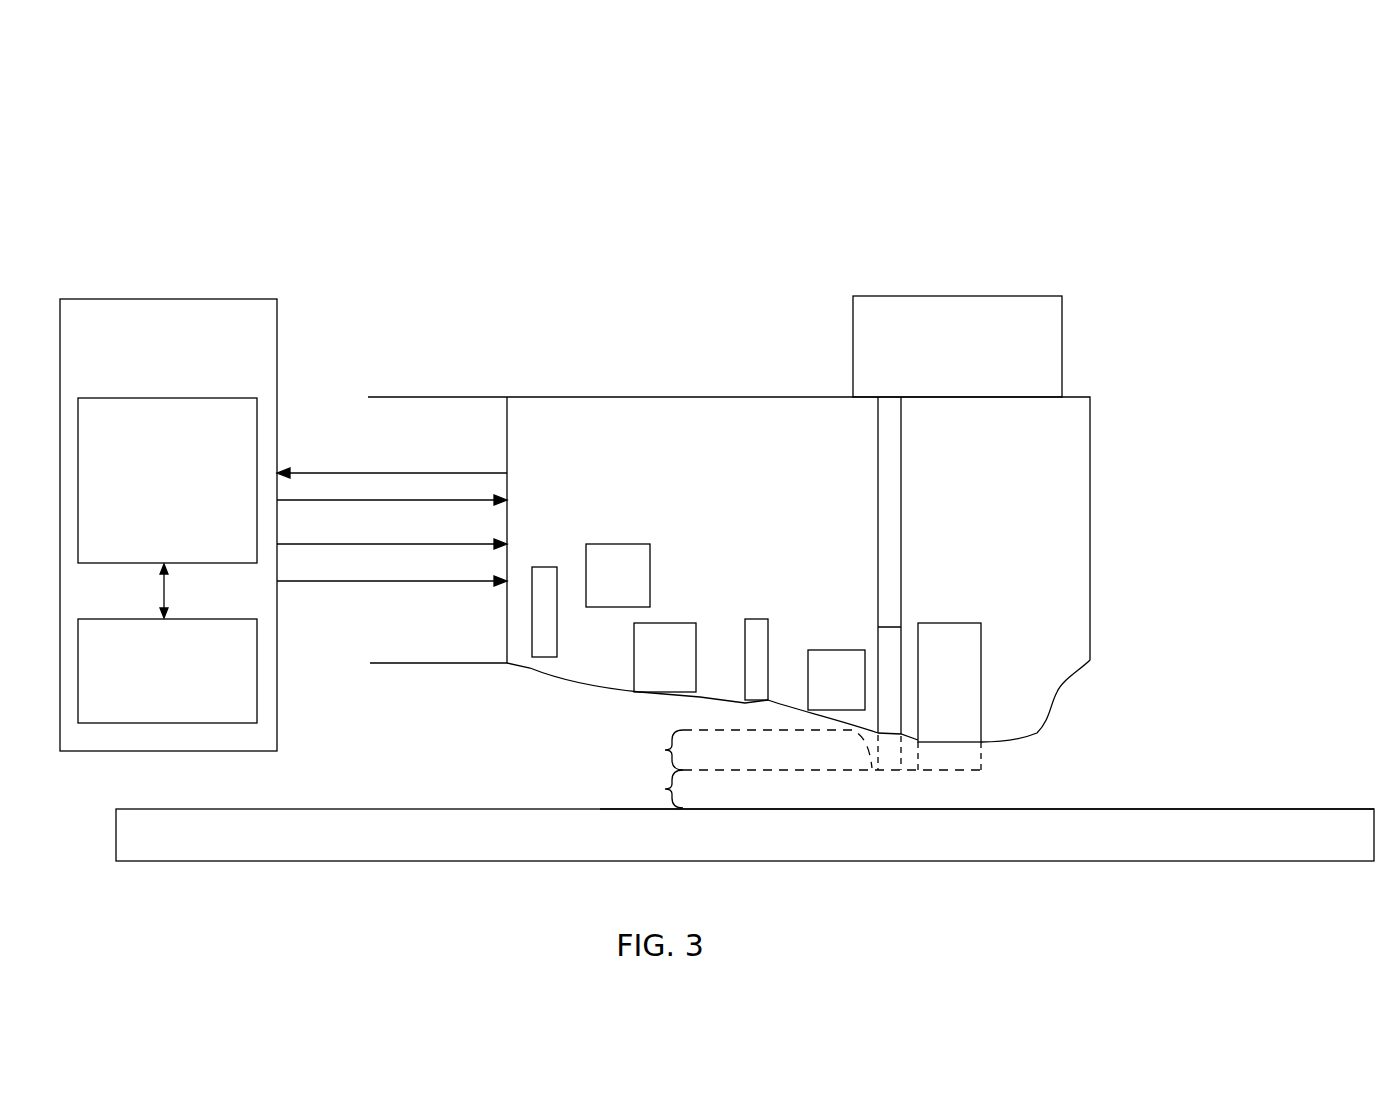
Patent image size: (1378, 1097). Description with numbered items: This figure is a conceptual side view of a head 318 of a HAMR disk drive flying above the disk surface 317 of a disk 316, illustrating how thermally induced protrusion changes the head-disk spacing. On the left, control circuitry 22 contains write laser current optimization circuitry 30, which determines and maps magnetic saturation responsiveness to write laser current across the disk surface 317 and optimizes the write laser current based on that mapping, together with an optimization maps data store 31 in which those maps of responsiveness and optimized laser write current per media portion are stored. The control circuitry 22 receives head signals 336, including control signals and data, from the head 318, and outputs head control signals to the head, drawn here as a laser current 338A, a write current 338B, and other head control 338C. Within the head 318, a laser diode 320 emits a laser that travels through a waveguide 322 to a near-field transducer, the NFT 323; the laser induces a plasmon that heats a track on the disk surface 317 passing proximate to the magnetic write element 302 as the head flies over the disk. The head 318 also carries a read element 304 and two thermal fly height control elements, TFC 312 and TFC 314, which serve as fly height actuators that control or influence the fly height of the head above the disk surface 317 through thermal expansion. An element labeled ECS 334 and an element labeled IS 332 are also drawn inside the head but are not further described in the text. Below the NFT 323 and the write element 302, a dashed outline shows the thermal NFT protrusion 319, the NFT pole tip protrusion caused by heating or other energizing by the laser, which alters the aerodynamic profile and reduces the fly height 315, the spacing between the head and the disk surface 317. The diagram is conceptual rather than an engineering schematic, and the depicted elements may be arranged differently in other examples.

The control circuitry 22 is at (168, 525).
The write laser current optimization circuitry 30 is at (167, 480).
The optimization maps data store 31 is at (167, 643).
The head signals 336 is at (392, 464).
The laser current head control signal 338A is at (392, 510).
The write current head control signal 338B is at (392, 554).
The other head control signal 338C is at (392, 603).
The head 318 is at (1134, 170).
The laser diode 320 is at (853, 345).
The thermal fly height control element 312 is at (547, 567).
The ECS 334 is at (618, 575).
The read element 304 is at (680, 623).
The thermal fly height control element 314 is at (758, 619).
The waveguide 322 is at (901, 535).
The near-field transducer 323 is at (878, 650).
The IS 332 is at (836, 680).
The write element 302 is at (981, 665).
The thermal NFT protrusion 319 is at (665, 750).
The fly height 315 is at (665, 789).
The disk 316 is at (745, 835).
The disk surface 317 is at (1236, 802).